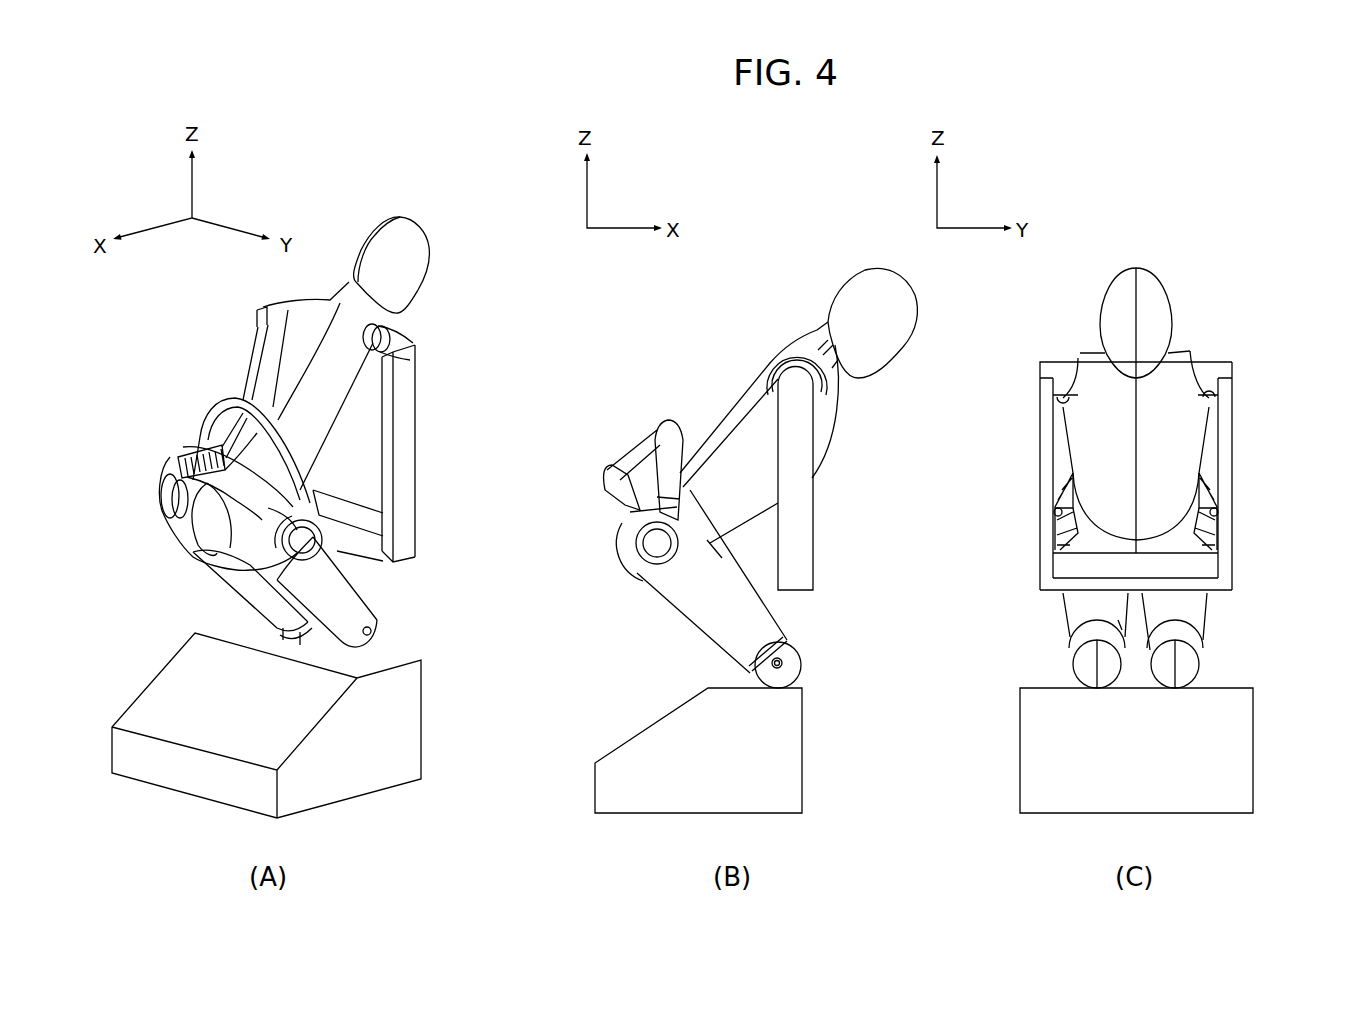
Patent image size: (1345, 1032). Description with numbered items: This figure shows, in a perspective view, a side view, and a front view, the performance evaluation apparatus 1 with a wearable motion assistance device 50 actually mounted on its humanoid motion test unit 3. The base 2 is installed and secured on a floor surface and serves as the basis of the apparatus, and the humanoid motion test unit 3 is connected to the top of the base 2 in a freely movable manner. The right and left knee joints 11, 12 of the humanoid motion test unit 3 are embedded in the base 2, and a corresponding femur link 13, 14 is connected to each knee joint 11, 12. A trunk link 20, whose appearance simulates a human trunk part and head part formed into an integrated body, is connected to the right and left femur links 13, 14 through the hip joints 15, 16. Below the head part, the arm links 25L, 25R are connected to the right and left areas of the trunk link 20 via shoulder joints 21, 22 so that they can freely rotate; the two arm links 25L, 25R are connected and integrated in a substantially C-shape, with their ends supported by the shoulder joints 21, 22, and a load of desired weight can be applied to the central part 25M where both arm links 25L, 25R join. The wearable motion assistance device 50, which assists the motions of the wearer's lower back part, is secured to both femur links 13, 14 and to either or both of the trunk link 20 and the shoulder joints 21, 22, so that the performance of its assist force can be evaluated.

The performance evaluation apparatus 1 is at (165, 378).
The base 2 is at (150, 680).
The humanoid motion test unit 3 is at (450, 284).
The knee joint 11 is at (280, 632).
The knee joint 12 is at (376, 638).
The femur link 13 is at (252, 588).
The femur link 14 is at (340, 597).
The hip joint 15 is at (183, 538).
The hip joint 16 is at (268, 556).
The trunk link 20 is at (262, 384).
The shoulder joint 21 is at (258, 318).
The shoulder joint 22 is at (384, 350).
The arm link 25R is at (402, 437).
The arm link 25L is at (1233, 460).
The central part 25M is at (365, 530).
The wearable motion assistance device 50 is at (183, 456).